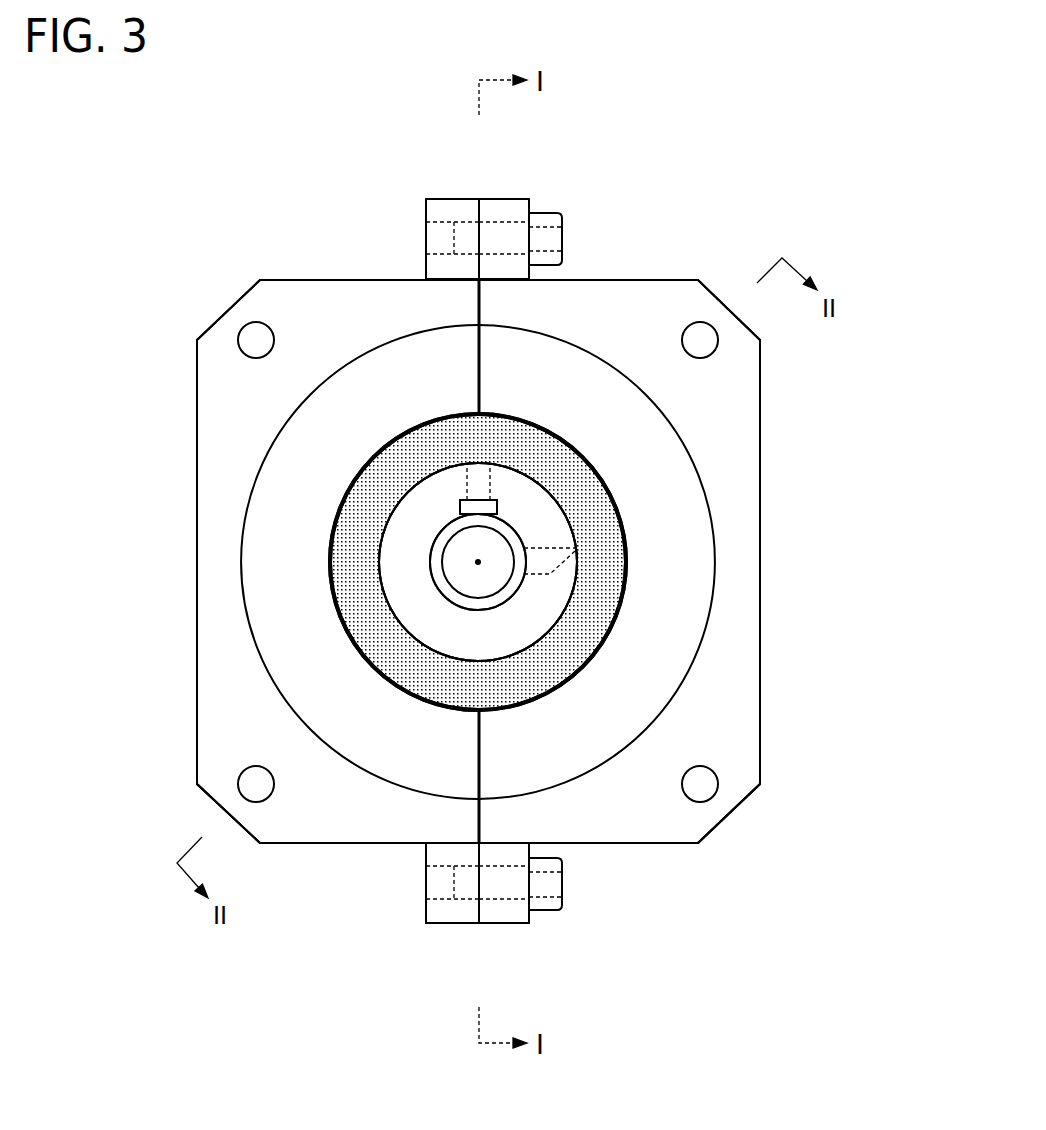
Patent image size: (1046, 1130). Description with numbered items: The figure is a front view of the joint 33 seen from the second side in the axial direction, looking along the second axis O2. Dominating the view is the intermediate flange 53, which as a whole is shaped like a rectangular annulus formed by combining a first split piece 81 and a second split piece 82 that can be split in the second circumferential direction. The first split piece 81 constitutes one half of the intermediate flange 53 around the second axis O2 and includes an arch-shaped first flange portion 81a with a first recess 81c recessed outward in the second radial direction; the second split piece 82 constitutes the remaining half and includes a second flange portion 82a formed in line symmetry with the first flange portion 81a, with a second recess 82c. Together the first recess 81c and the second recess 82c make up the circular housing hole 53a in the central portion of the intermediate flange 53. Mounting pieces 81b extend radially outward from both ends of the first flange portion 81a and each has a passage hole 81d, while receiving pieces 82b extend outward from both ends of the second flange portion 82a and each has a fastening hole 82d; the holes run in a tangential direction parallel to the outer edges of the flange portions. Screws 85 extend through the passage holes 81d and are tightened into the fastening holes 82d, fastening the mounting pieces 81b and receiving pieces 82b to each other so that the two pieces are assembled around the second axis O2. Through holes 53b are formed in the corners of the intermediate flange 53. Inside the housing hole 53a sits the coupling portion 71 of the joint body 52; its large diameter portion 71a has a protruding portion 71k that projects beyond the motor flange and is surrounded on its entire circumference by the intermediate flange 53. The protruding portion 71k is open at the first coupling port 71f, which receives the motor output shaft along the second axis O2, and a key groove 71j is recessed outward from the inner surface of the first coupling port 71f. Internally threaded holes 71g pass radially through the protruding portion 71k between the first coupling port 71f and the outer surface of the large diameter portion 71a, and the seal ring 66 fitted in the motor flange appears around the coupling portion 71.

The joint 33 is at (531, 205).
The intermediate flange 53 is at (688, 276).
The housing hole 53a is at (538, 680).
The through holes 53b is at (700, 322).
The joint body 52 is at (618, 562).
The coupling portion 71 is at (568, 492).
The large diameter portion 71a is at (302, 586).
The protruding portion 71k is at (405, 588).
The first coupling port 71f is at (445, 587).
The internally threaded hole 71g is at (467, 467).
The key groove 71j is at (462, 503).
The seal ring 66 is at (607, 587).
The second axis O2 is at (478, 562).
The first split piece 81 is at (772, 385).
The first flange portion 81a is at (683, 833).
The mounting pieces 81b is at (503, 208).
The first recess 81c is at (598, 633).
The passage hole 81d is at (509, 224).
The second split piece 82 is at (184, 385).
The second flange portion 82a is at (288, 832).
The receiving pieces 82b is at (453, 208).
The second recess 82c is at (345, 542).
The fastening hole 82d is at (439, 223).
The screws 85 is at (550, 241).